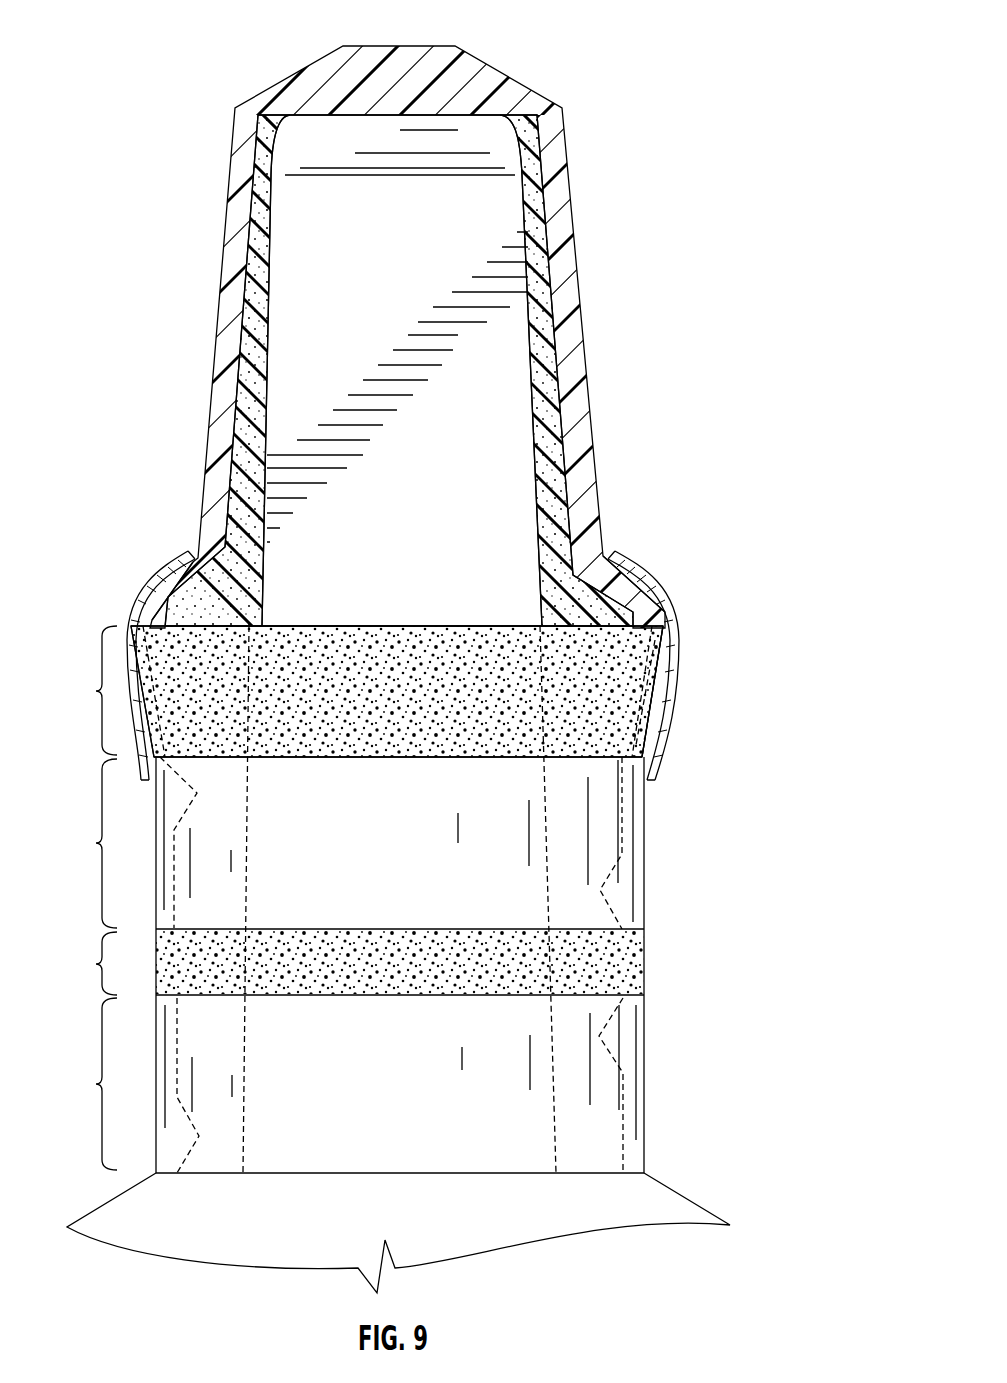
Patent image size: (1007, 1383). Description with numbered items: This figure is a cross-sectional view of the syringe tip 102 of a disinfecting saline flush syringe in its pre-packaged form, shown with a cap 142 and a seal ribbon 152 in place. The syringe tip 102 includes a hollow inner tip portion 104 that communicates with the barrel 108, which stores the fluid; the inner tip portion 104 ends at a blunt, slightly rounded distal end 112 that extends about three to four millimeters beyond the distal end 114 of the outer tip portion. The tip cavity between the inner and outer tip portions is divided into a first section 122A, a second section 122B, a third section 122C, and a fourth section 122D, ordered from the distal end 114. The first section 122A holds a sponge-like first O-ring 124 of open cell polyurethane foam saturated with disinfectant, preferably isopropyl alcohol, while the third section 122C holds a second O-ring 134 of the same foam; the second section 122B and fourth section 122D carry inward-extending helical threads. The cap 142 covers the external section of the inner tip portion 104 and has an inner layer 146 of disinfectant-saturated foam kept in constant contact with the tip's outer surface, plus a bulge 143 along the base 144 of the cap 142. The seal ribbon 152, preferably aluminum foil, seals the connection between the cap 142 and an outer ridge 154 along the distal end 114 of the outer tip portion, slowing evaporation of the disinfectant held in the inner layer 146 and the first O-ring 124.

The syringe tip 102 is at (726, 264).
The hollow inner tip portion 104 is at (493, 410).
The barrel 108 is at (700, 1203).
The distal end of the inner tip portion 112 is at (508, 137).
The distal end of the outer tip portion 114 is at (660, 640).
The first section 122A is at (81, 690).
The second section 122B is at (339, 843).
The third section 122C is at (344, 962).
The fourth section 122D is at (340, 1085).
The first O-ring 124 is at (572, 717).
The second O-ring 134 is at (598, 968).
The cap 142 is at (470, 68).
The bulge 143 is at (622, 588).
The base of the cap 144 is at (582, 627).
The inner layer 146 is at (538, 220).
The seal ribbon 152 is at (654, 598).
The outer ridge 154 is at (635, 678).